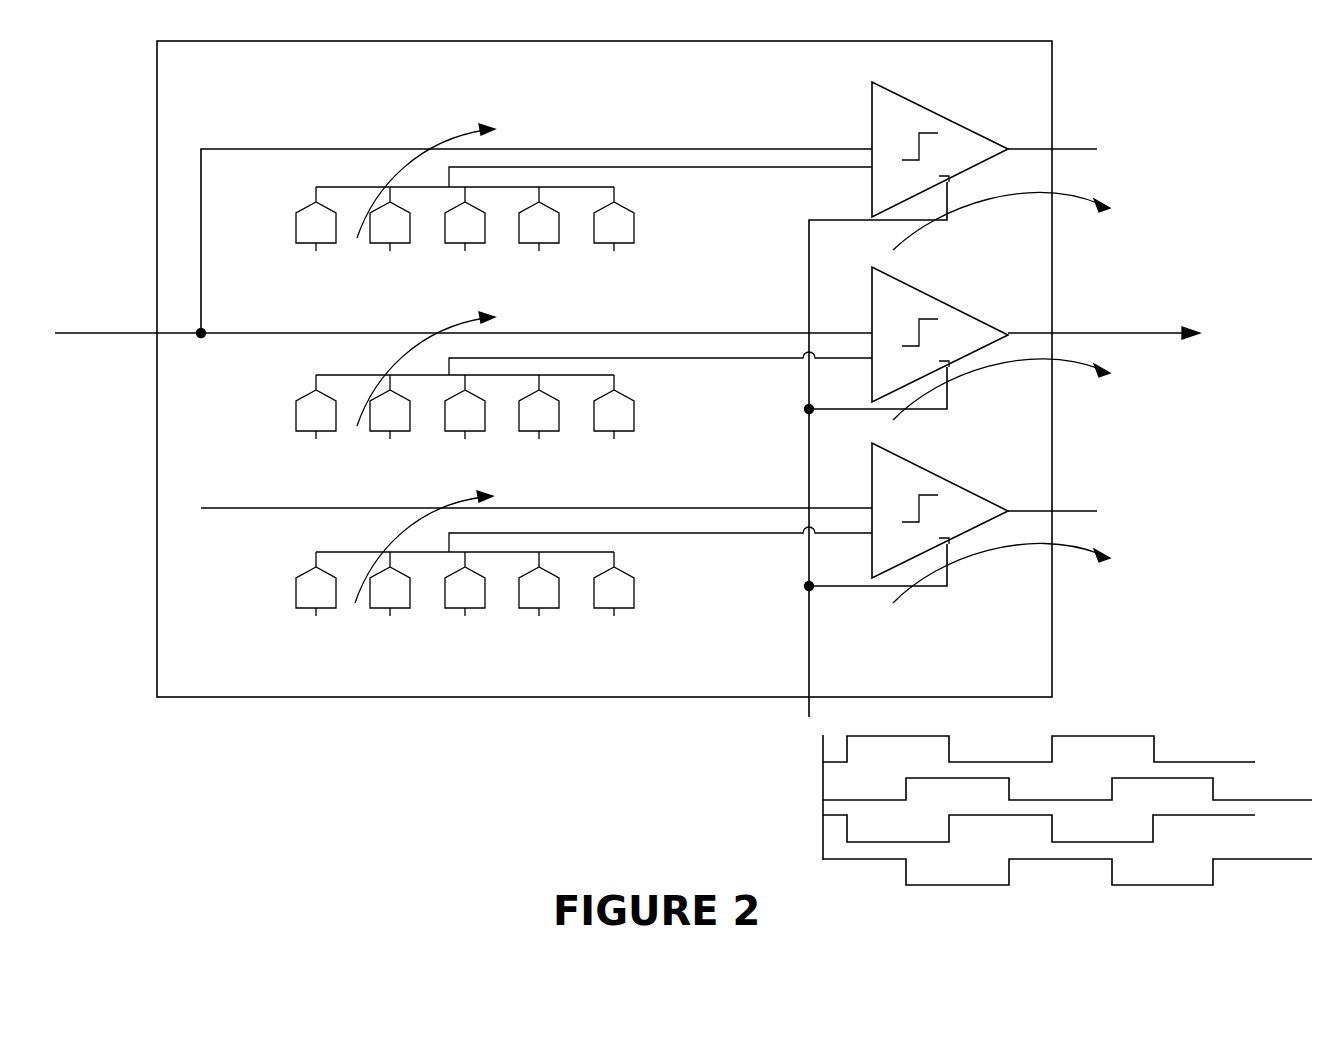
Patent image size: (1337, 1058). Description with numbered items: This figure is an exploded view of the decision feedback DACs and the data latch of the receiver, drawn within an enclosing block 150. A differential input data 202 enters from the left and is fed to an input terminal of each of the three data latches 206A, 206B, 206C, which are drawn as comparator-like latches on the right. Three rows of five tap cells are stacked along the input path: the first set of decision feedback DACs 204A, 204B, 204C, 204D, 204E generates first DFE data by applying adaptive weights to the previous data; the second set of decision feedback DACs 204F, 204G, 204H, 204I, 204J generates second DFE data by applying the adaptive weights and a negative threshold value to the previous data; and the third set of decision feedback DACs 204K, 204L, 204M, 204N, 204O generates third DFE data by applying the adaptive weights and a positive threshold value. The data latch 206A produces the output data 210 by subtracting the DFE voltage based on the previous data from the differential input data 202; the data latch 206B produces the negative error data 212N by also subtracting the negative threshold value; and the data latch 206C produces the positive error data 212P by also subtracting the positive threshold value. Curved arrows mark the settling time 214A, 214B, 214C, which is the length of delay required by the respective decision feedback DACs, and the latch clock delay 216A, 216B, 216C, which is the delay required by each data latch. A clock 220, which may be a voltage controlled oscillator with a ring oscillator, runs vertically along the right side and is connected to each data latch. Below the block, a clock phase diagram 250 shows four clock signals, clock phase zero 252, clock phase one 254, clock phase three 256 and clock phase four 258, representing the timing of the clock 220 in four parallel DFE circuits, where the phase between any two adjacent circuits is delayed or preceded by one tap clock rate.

The signal processing circuit 150 is at (1042, 623).
The differential input data 202 is at (107, 333).
The first decision feedback DAC 204A is at (302, 431).
The first decision feedback DAC 204B is at (376, 431).
The first decision feedback DAC 204C is at (451, 431).
The first decision feedback DAC 204D is at (525, 431).
The first decision feedback DAC 204E is at (600, 431).
The second decision feedback DAC 204F is at (302, 243).
The second decision feedback DAC 204G is at (376, 243).
The second decision feedback DAC 204H is at (451, 243).
The second decision feedback DAC 204I is at (525, 243).
The second decision feedback DAC 204J is at (600, 243).
The third decision feedback DAC 204K is at (302, 608).
The third decision feedback DAC 204L is at (376, 608).
The third decision feedback DAC 204M is at (451, 608).
The third decision feedback DAC 204N is at (525, 608).
The third decision feedback DAC 204O is at (600, 608).
The data latch 206A is at (923, 298).
The data latch 206B is at (918, 110).
The data latch 206C is at (923, 475).
The output data 210 is at (1072, 335).
The negative error data 212N is at (1097, 150).
The positive error data 212P is at (1097, 511).
The settling time 214A is at (397, 343).
The settling time 214B is at (398, 160).
The settling time 214C is at (405, 519).
The latch clock delay 216A is at (1090, 365).
The latch clock delay 216B is at (1077, 192).
The latch clock delay 216C is at (1105, 548).
The clock 220 is at (809, 648).
The clock phase diagram 250 is at (1240, 891).
The clock phase 0 252 is at (1180, 760).
The clock phase 1 254 is at (1215, 798).
The clock phase 3 256 is at (1213, 815).
The clock phase 4 258 is at (1238, 858).